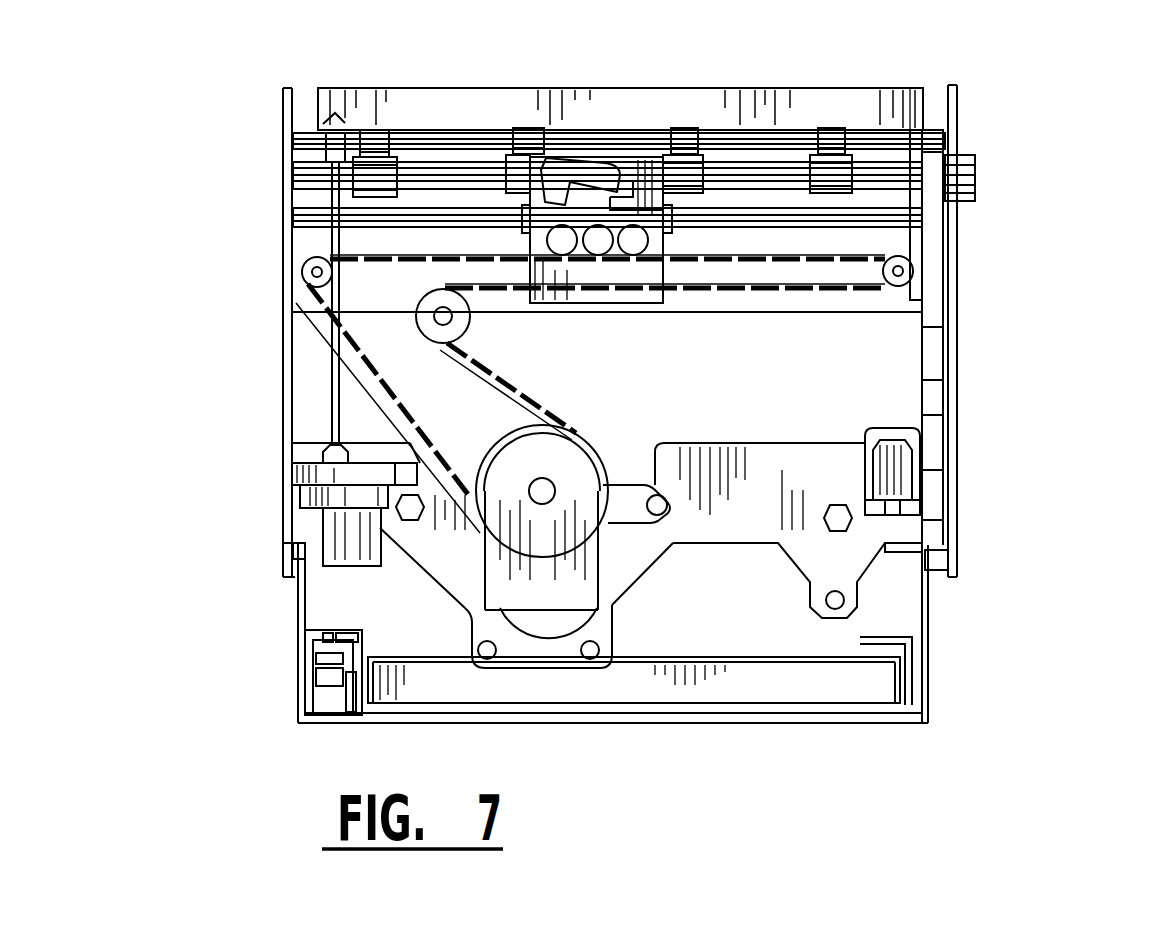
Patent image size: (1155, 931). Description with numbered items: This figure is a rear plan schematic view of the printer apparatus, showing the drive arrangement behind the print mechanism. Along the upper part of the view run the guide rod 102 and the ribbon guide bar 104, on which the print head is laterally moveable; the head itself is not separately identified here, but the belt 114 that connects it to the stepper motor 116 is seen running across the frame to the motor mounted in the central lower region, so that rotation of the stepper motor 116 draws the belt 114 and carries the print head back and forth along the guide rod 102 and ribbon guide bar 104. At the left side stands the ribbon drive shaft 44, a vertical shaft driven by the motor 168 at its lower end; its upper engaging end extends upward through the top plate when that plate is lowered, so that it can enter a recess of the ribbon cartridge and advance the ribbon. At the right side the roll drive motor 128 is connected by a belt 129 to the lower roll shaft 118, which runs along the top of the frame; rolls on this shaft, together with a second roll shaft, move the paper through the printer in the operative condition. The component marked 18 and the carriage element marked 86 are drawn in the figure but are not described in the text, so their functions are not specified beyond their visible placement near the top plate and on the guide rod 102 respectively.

The top plate housing 18 is at (838, 108).
The lower roll shaft 118 is at (875, 170).
The pen carriage 86 is at (660, 160).
The guide rod 102 is at (865, 220).
The ribbon guide bar 104 is at (865, 300).
The belt 114 is at (530, 380).
The belt 129 is at (930, 362).
The roll drive motor 128 is at (890, 420).
The ribbon drive shaft 44 is at (336, 345).
The motor 168 is at (370, 565).
The stepper motor 116 is at (600, 630).